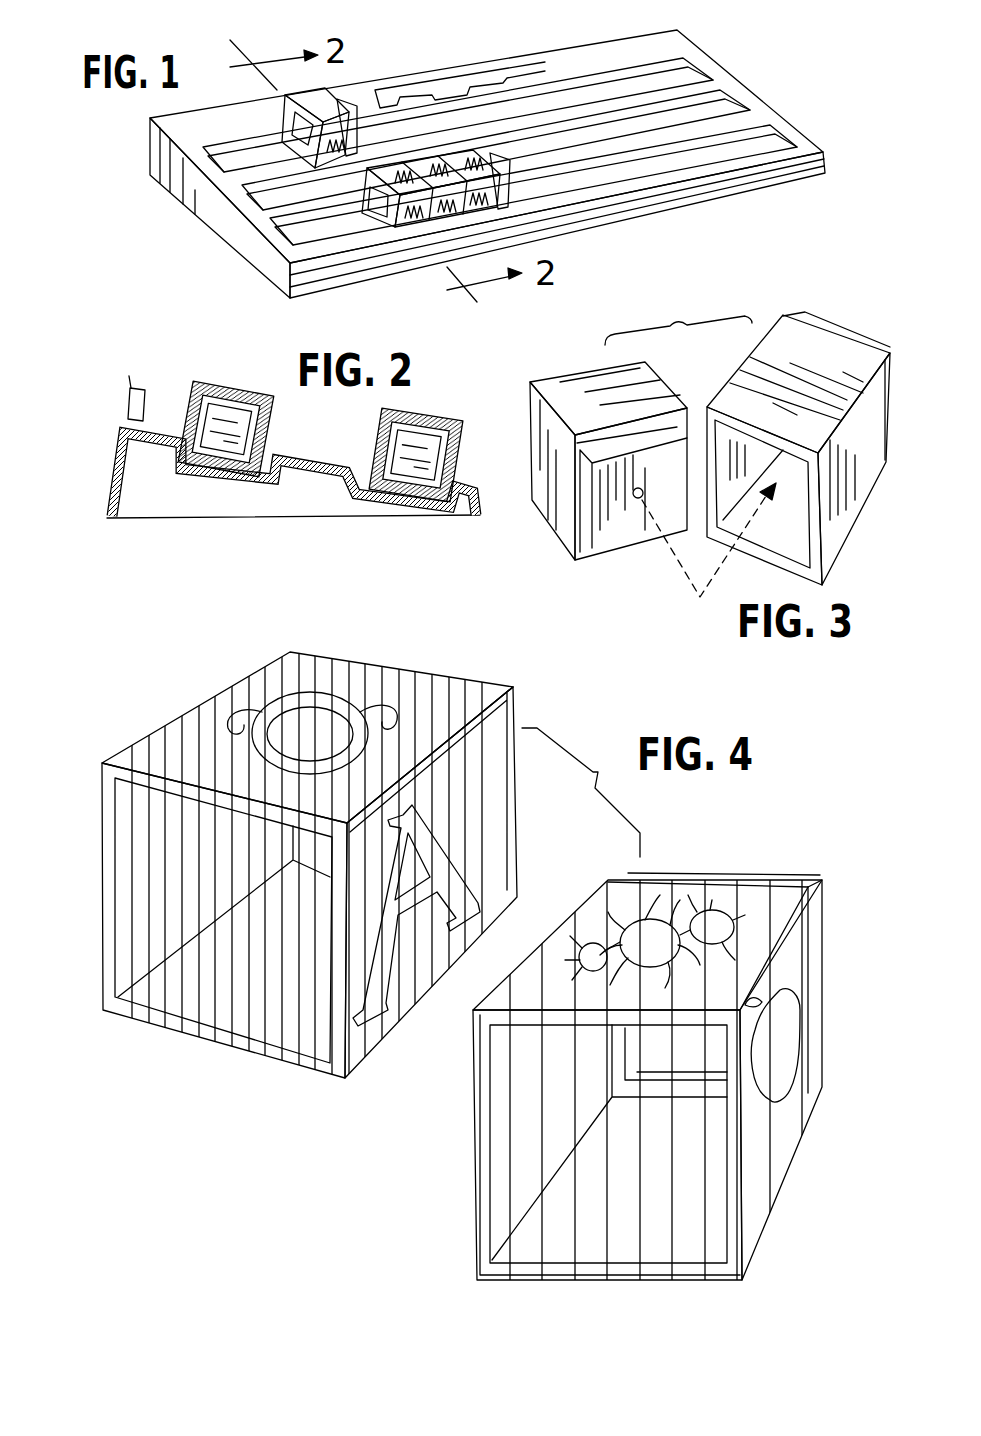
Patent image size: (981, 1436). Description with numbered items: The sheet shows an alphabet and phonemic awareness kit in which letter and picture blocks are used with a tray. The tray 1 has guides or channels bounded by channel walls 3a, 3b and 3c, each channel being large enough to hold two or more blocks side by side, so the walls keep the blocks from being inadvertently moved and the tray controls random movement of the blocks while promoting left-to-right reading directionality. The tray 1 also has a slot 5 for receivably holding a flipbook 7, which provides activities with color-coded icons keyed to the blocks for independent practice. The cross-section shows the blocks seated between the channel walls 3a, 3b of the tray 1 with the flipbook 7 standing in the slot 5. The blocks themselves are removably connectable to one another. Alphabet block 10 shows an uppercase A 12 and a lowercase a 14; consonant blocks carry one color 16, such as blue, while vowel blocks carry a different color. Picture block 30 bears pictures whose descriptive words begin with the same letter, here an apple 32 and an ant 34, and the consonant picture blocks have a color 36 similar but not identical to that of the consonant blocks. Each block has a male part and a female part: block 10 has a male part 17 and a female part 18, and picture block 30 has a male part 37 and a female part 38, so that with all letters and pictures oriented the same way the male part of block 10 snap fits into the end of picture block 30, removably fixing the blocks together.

In FIG. 1, the tray 1 is at (613, 58).
In FIG. 2, the tray 1 is at (104, 490).
In FIG. 1, the channel wall 3a is at (683, 73).
In FIG. 2, the channel wall 3a is at (413, 493).
In FIG. 1, the channel wall 3b is at (720, 107).
In FIG. 2, the channel wall 3b is at (213, 470).
In FIG. 1, the channel wall 3c is at (770, 140).
In FIG. 1, the slot 5 is at (529, 70).
In FIG. 2, the flipbook 7 is at (128, 405).
In FIG. 4, the alphabet block 10 is at (138, 713).
In FIG. 4, the uppercase A 12 is at (360, 1070).
In FIG. 4, the lowercase a 14 is at (253, 708).
In FIG. 4, the color 16 is at (337, 652).
In FIG. 4, the male part 17 is at (466, 673).
In FIG. 4, the female part 18 is at (147, 995).
In FIG. 4, the picture block 30 is at (494, 975).
In FIG. 4, the apple 32 is at (818, 977).
In FIG. 4, the ant 34 is at (720, 920).
In FIG. 4, the color 36 is at (765, 907).
In FIG. 4, the male part 37 is at (665, 873).
In FIG. 4, the female part 38 is at (500, 1190).